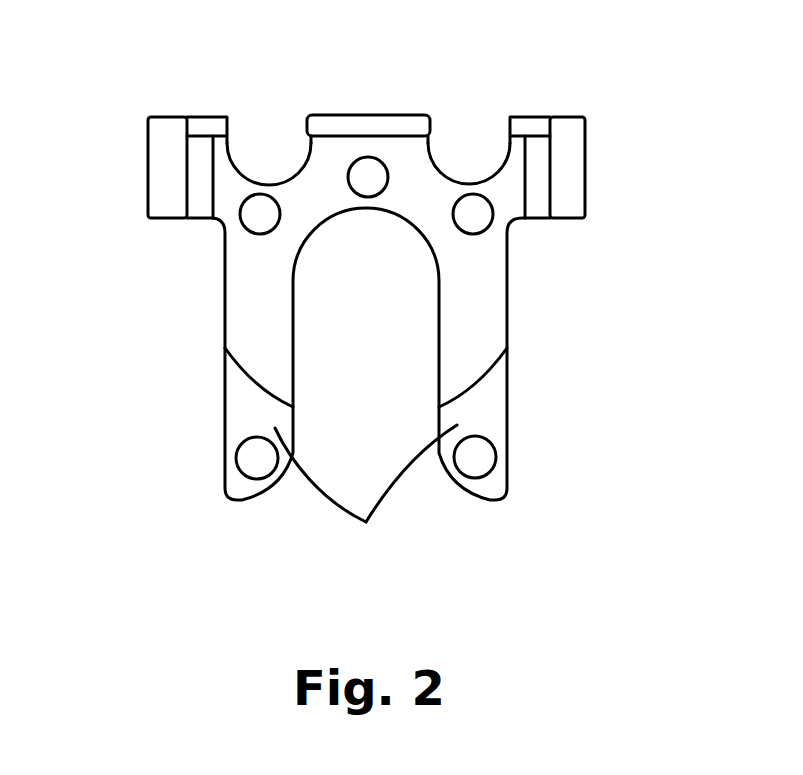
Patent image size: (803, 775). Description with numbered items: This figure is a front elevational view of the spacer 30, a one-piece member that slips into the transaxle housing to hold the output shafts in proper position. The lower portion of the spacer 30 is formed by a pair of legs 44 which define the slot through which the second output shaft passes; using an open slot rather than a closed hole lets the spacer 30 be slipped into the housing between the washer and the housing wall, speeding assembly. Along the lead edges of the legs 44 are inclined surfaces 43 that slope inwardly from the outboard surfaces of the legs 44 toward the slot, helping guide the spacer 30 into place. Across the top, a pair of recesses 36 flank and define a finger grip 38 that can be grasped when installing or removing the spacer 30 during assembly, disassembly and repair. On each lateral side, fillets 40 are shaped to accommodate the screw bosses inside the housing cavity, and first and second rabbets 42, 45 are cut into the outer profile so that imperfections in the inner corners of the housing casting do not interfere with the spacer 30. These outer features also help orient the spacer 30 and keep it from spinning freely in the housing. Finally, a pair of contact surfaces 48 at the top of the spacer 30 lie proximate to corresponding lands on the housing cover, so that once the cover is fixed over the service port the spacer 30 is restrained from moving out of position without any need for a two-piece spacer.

The spacer 30 is at (650, 333).
The recesses 36 is at (265, 183).
The finger grip 38 is at (373, 115).
The fillets 40 is at (163, 172).
The first rabbet 42 is at (366, 494).
The inclined surfaces 43 is at (263, 490).
The legs 44 is at (225, 385).
The second rabbet 45 is at (200, 195).
The contact surfaces 48 is at (203, 117).